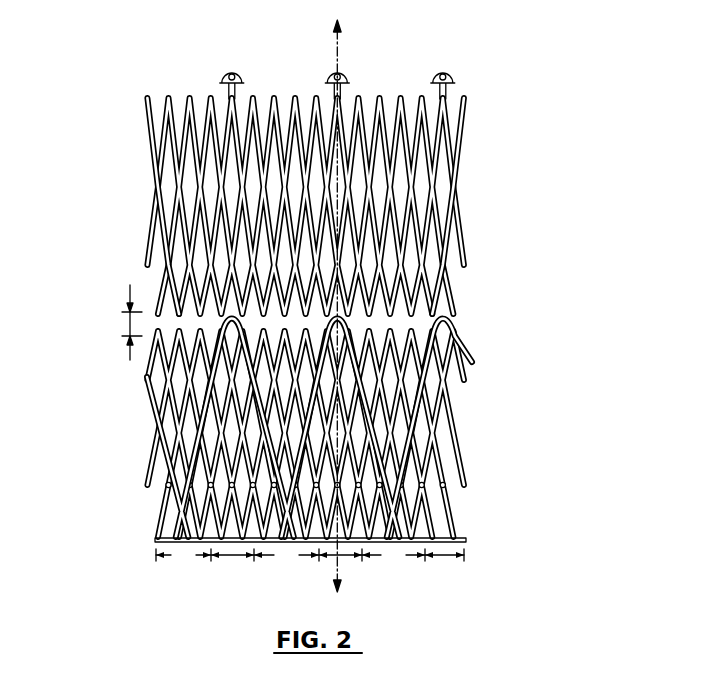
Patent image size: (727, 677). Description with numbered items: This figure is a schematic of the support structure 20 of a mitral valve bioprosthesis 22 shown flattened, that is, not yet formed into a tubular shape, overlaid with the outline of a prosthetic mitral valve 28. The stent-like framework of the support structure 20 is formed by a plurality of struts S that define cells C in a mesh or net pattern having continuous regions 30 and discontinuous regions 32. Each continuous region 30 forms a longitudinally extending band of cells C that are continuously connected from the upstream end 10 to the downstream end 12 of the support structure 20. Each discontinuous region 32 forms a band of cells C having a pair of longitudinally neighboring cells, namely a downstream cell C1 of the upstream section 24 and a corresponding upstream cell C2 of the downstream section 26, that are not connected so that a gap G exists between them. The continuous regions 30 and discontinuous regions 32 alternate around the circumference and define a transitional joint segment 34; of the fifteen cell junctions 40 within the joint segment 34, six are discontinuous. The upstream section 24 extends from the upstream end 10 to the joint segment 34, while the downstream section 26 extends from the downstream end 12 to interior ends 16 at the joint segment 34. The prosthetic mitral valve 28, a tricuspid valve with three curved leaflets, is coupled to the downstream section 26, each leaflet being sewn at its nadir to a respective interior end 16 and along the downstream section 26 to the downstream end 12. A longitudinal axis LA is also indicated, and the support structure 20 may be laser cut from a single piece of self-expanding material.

The upstream end 10 is at (313, 314).
The downstream end 12 is at (468, 540).
The interior end 16 is at (247, 310).
The support structure 20 is at (319, 206).
The mitral valve bioprosthesis 22 is at (603, 167).
The upstream section 24 is at (459, 179).
The downstream section 26 is at (254, 434).
The prosthetic mitral valve 28 is at (364, 408).
The continuous region 30 is at (316, 576).
The discontinuous region 32 is at (235, 561).
The joint segment 34 is at (128, 324).
The cell junction 40 is at (435, 318).
The strut S is at (160, 127).
The cell C is at (168, 173).
The downstream cell of upstream section C1 is at (220, 250).
The upstream cell of downstream section C2 is at (222, 382).
The gap G is at (212, 320).
The longitudinal axis LA is at (357, 306).